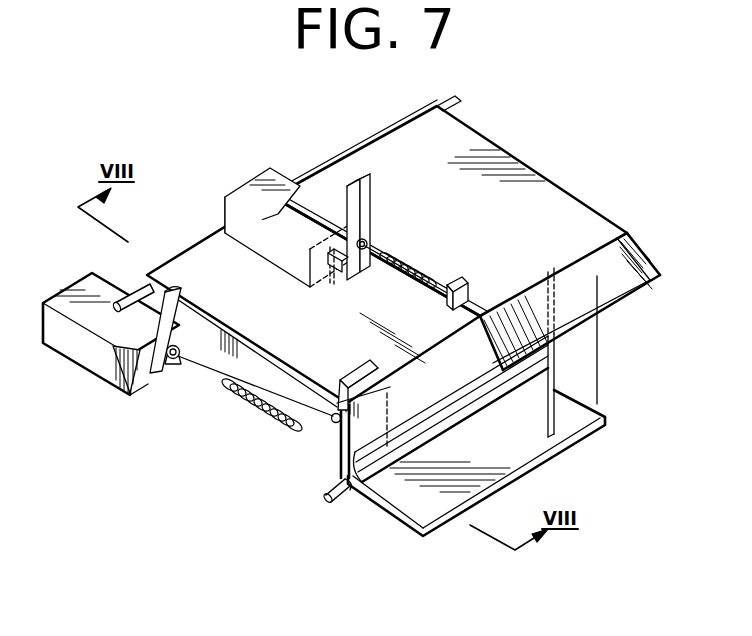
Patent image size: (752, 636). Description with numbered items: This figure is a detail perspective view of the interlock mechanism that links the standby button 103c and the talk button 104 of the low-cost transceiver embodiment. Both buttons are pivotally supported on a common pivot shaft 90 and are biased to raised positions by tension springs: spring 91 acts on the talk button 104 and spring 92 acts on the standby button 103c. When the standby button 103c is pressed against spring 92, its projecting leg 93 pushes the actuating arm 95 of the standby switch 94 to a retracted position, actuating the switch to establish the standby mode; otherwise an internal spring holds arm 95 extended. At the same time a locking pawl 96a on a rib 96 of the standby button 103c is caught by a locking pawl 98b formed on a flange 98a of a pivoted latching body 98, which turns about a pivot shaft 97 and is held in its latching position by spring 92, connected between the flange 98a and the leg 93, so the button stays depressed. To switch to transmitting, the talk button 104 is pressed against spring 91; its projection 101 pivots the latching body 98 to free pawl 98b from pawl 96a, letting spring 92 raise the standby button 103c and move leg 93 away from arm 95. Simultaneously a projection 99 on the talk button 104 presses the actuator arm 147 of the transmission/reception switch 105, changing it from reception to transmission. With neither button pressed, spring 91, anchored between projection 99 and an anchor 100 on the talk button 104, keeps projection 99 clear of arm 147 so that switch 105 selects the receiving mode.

The common pivot shaft 90 is at (135, 290).
The tension spring 91 is at (400, 254).
The tension spring 92 is at (238, 400).
The projecting leg 93 is at (172, 366).
The standby switch 94 is at (72, 350).
The actuating arm 95 is at (147, 378).
The rib 96 is at (340, 384).
The locking pawl 96a is at (328, 420).
The pivot shaft 97 is at (345, 498).
The latching body 98 is at (523, 445).
The flange 98a is at (343, 470).
The locking pawl 98b is at (398, 390).
The projection 99 is at (362, 208).
The anchor 100 is at (470, 292).
The projection 101 is at (582, 346).
The standby button 103c is at (199, 256).
The talk button 104 is at (551, 205).
The transmission/reception switch 105 is at (257, 196).
The actuator arm 147 is at (334, 278).